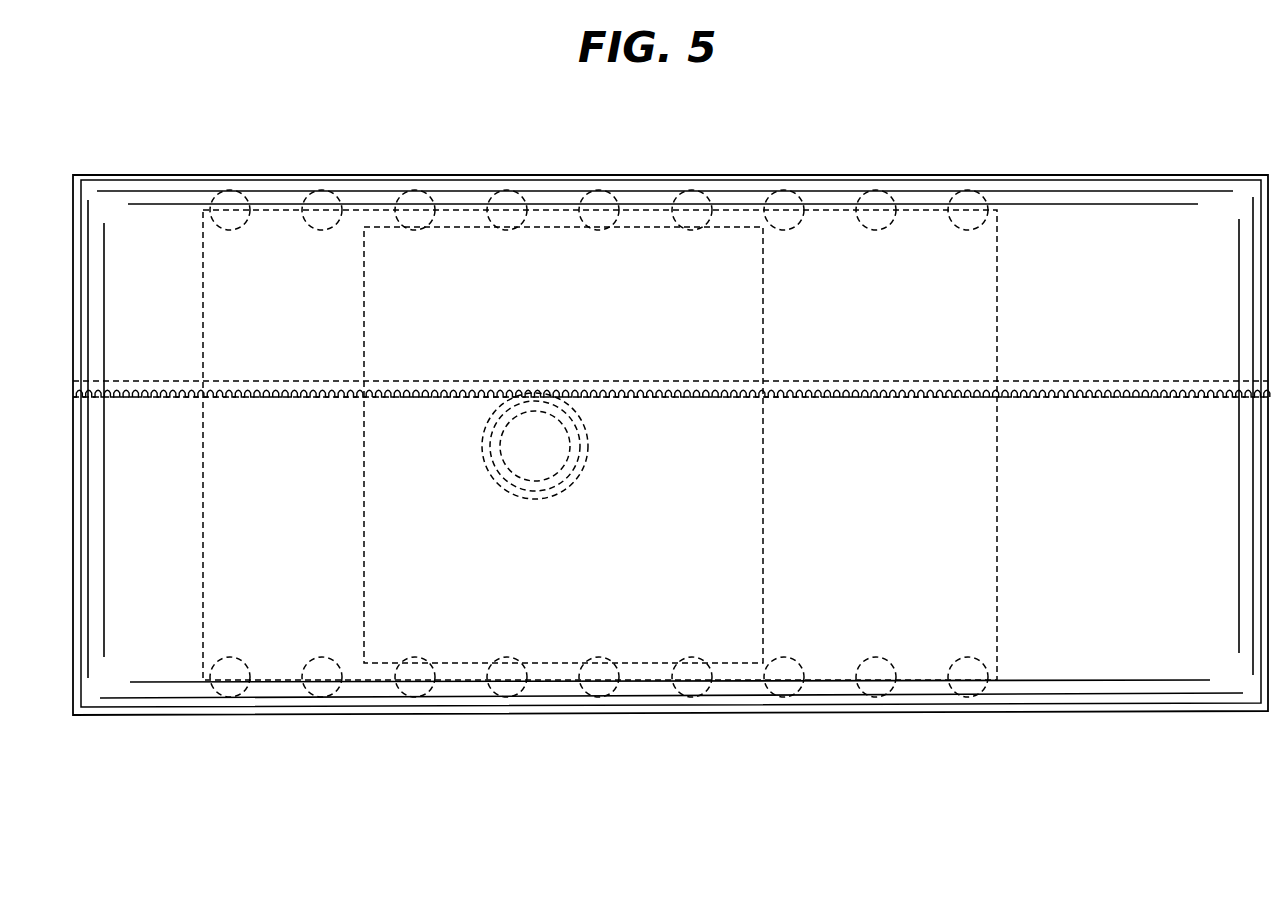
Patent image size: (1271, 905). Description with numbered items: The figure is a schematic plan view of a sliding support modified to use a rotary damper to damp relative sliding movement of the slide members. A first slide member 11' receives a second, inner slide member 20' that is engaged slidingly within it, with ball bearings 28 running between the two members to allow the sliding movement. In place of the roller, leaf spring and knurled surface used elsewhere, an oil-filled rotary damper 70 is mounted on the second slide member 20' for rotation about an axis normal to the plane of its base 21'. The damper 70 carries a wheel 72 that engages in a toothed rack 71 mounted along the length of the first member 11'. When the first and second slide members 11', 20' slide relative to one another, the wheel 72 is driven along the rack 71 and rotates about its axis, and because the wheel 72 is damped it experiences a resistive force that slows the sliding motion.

The first slide member 11' is at (670, 412).
The second slide member 20' is at (563, 398).
The base 21' is at (670, 369).
The ball bearings 28 is at (231, 208).
The rotary damper 70 is at (533, 470).
The toothed rack 71 is at (1046, 383).
The wheel 72 is at (497, 465).